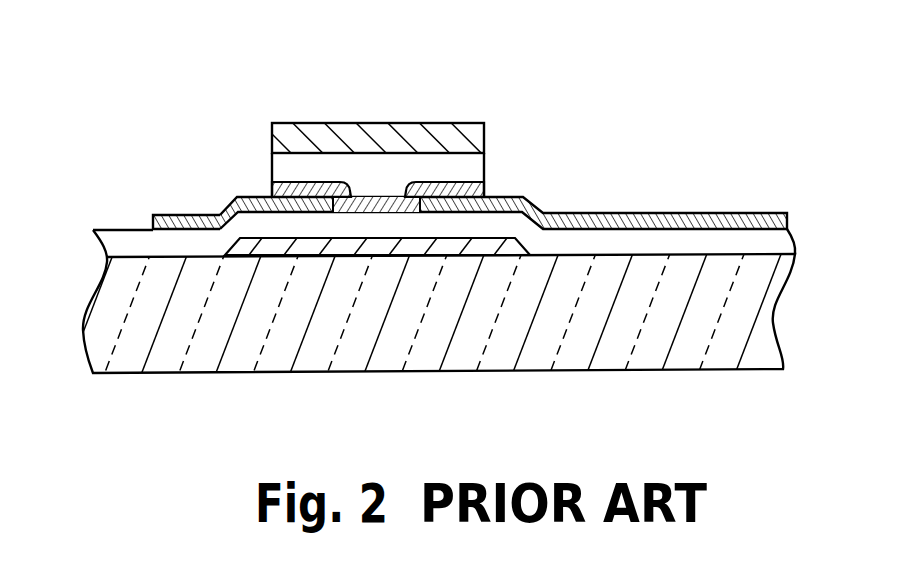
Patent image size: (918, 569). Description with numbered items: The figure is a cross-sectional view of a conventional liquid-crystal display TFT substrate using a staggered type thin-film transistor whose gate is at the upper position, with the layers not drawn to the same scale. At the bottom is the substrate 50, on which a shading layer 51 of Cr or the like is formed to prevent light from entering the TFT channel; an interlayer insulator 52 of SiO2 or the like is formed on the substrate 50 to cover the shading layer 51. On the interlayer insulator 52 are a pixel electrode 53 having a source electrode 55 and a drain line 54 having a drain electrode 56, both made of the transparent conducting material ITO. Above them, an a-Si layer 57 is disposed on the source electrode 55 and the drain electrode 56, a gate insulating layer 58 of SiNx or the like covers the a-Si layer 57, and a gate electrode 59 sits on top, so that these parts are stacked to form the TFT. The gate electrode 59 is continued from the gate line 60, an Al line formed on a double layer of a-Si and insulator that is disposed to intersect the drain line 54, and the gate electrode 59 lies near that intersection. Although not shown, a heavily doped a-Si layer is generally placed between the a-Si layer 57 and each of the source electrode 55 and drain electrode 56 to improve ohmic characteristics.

The substrate 50 is at (720, 336).
The shading layer 51 is at (372, 257).
The interlayer insulator 52 is at (753, 243).
The pixel electrode 53 is at (653, 216).
The drain line 54 is at (163, 215).
The source electrode 55 is at (457, 181).
The drain electrode 56 is at (284, 182).
The a-Si layer 57 is at (410, 188).
The gate insulating layer 58 is at (368, 175).
The gate electrode 59 is at (387, 86).
The gate line 60 is at (332, 130).